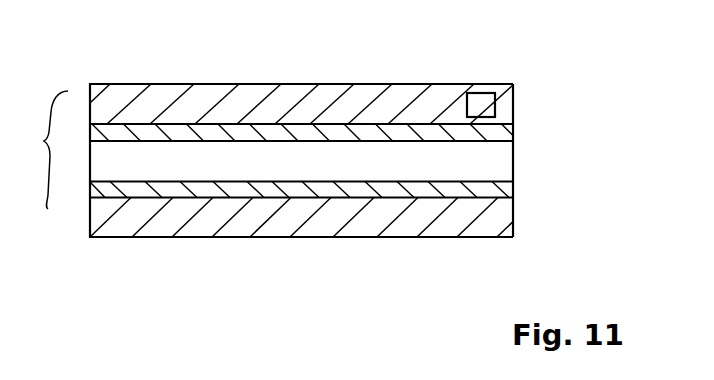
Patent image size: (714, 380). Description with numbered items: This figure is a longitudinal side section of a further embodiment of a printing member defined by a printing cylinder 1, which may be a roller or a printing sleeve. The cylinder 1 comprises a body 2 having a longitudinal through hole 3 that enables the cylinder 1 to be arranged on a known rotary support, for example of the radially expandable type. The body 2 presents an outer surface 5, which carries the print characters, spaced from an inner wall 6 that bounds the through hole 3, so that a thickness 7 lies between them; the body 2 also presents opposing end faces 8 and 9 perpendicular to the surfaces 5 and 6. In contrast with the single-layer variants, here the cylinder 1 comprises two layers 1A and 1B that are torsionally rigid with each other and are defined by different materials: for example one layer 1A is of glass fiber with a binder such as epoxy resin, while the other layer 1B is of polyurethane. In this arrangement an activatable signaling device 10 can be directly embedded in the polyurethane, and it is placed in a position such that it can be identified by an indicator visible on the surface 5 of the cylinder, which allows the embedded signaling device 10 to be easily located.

The printing cylinder 1 is at (562, 139).
The layer 1A is at (456, 191).
The layer 1B is at (456, 218).
The body 2 is at (42, 150).
The longitudinal through hole 3 is at (278, 164).
The outer surface 5 is at (163, 84).
The inner wall 6 is at (378, 143).
The thickness 7 is at (245, 102).
The end face 8 is at (89, 85).
The end face 9 is at (514, 120).
The activatable signaling device 10 is at (479, 102).